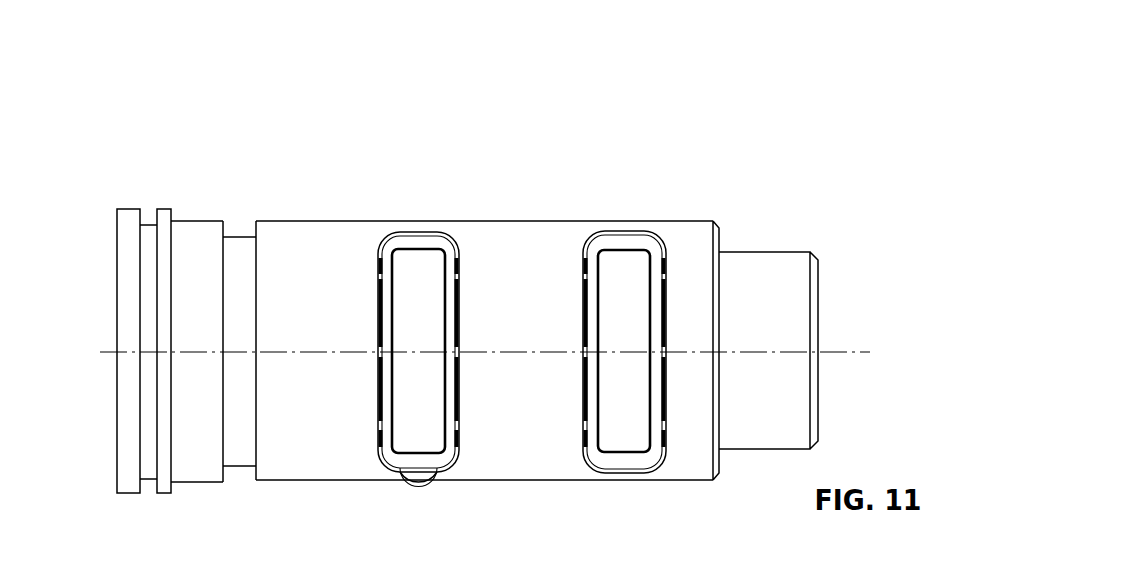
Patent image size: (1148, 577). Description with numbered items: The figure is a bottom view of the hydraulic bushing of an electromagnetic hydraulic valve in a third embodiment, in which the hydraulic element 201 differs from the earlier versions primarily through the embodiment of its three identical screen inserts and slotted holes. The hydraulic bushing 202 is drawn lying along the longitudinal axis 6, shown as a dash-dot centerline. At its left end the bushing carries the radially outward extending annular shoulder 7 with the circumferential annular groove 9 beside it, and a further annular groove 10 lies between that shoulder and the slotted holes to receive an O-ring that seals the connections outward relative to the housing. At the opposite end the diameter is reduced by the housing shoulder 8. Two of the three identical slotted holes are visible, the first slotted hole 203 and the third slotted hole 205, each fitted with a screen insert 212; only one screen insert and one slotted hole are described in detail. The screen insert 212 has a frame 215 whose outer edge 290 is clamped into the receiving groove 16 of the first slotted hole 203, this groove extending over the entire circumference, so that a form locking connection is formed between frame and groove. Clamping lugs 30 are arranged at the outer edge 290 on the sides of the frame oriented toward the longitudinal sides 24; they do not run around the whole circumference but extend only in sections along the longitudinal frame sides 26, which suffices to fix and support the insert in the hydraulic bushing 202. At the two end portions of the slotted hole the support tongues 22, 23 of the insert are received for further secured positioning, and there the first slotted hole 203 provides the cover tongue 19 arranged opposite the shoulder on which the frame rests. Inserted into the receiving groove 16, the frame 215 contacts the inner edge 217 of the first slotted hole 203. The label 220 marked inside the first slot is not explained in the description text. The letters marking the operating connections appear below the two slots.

The longitudinal axis 6 is at (860, 350).
The annular shoulder 7 is at (129, 217).
The housing shoulder 8 is at (723, 244).
The circumferential annular groove 9 is at (147, 224).
The annular groove 10 is at (235, 234).
The receiving groove 16 is at (383, 240).
The cover tongue 19 is at (443, 468).
The support tongue 22 is at (429, 240).
The support tongue 23 is at (411, 462).
The longitudinal side 24 is at (380, 341).
The longitudinal frame side 26 is at (384, 300).
The clamping lug 30 is at (382, 426).
The hydraulic element 201 is at (752, 135).
The hydraulic bushing 202 is at (303, 210).
The first slotted hole 203 is at (459, 226).
The third slotted hole 205 is at (666, 228).
The screen insert 212 is at (419, 226).
The frame 215 is at (457, 296).
The inner edge 217 is at (456, 394).
The slot window 220 is at (436, 336).
The outer edge 290 is at (458, 340).